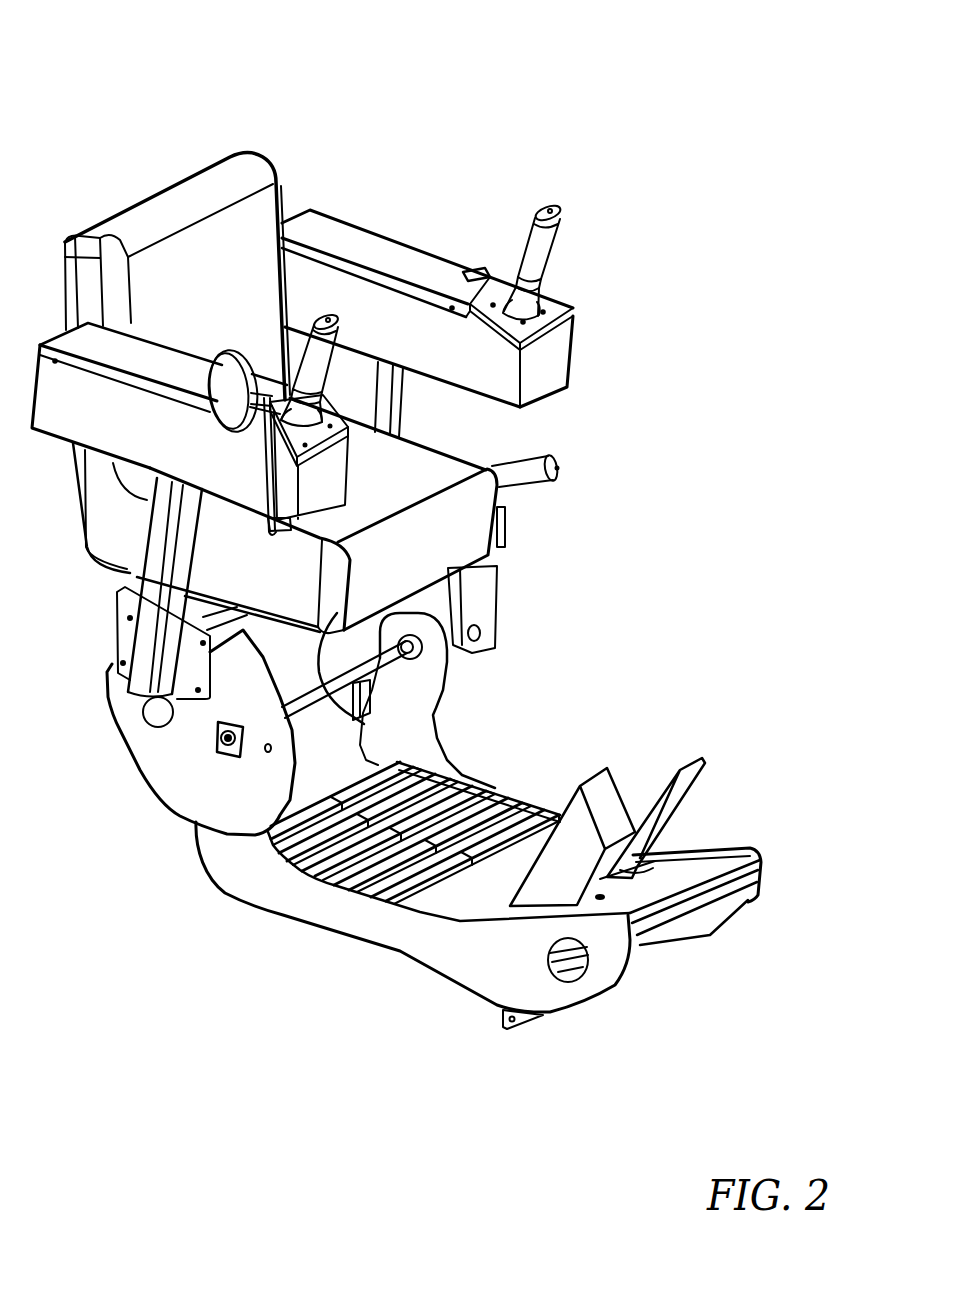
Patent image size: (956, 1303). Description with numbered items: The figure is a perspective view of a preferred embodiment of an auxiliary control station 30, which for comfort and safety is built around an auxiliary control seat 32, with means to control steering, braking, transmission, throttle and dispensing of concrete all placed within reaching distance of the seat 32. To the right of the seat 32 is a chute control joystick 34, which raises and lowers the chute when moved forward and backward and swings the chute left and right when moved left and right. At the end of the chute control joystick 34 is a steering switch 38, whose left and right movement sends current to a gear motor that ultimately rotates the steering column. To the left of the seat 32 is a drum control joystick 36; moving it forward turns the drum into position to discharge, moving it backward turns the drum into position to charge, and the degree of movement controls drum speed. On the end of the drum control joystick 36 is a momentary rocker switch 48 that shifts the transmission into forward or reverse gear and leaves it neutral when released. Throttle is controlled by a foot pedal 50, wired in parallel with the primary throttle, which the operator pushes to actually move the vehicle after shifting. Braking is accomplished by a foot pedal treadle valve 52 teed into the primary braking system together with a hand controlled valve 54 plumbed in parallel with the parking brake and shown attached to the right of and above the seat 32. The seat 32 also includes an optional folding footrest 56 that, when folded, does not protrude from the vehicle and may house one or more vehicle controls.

The auxiliary control station 30 is at (256, 88).
The auxiliary control seat 32 is at (176, 170).
The chute control joystick 34 is at (345, 355).
The drum control joystick 36 is at (558, 233).
The steering switch 38 is at (325, 318).
The momentary rocker switch 48 is at (550, 210).
The foot pedal 50 is at (590, 778).
The foot pedal treadle valve 52 is at (660, 772).
The hand controlled valve 54 is at (562, 476).
The folding footrest 56 is at (326, 944).